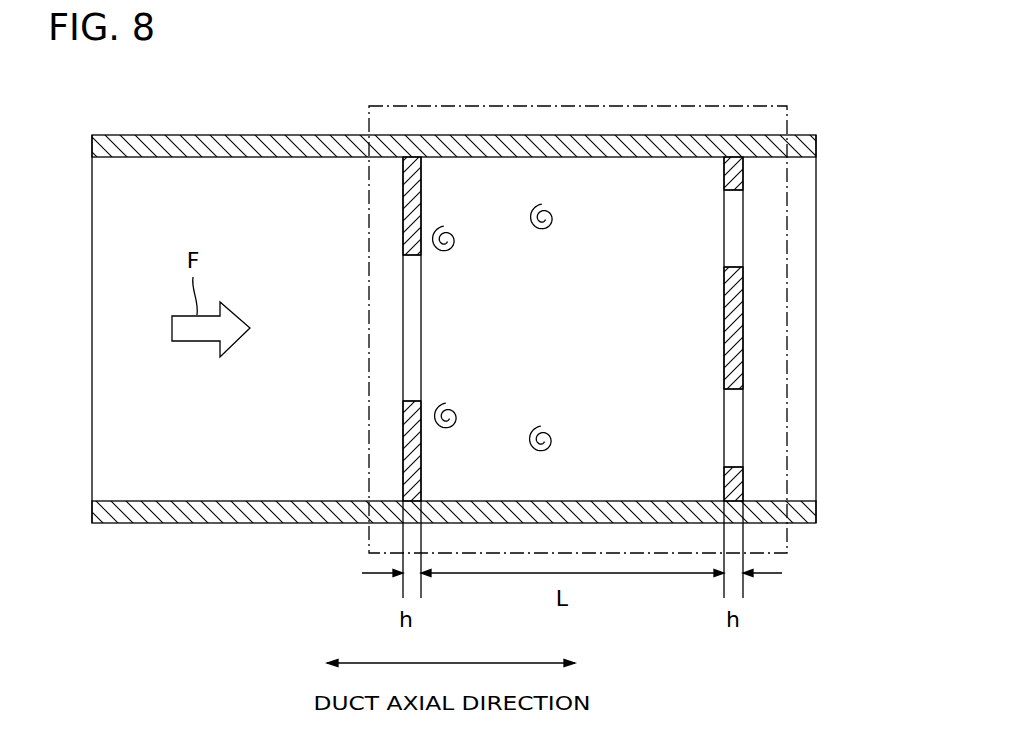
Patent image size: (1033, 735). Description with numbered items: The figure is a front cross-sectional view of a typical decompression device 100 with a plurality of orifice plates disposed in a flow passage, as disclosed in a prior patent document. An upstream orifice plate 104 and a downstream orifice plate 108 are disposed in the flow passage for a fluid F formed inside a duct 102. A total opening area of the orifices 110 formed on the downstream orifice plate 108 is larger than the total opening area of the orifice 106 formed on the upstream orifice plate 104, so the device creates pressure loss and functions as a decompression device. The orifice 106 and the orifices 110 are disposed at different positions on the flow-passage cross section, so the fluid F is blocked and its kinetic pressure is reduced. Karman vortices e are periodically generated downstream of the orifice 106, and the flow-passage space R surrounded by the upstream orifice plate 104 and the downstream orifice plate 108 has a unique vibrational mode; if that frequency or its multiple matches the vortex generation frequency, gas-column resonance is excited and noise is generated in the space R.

The compression device 100 is at (689, 132).
The duct 102 is at (285, 135).
The upstream orifice plate 104 is at (403, 193).
The orifice 106 is at (421, 260).
The downstream orifice plate 108 is at (741, 298).
The orifices 110 is at (741, 401).